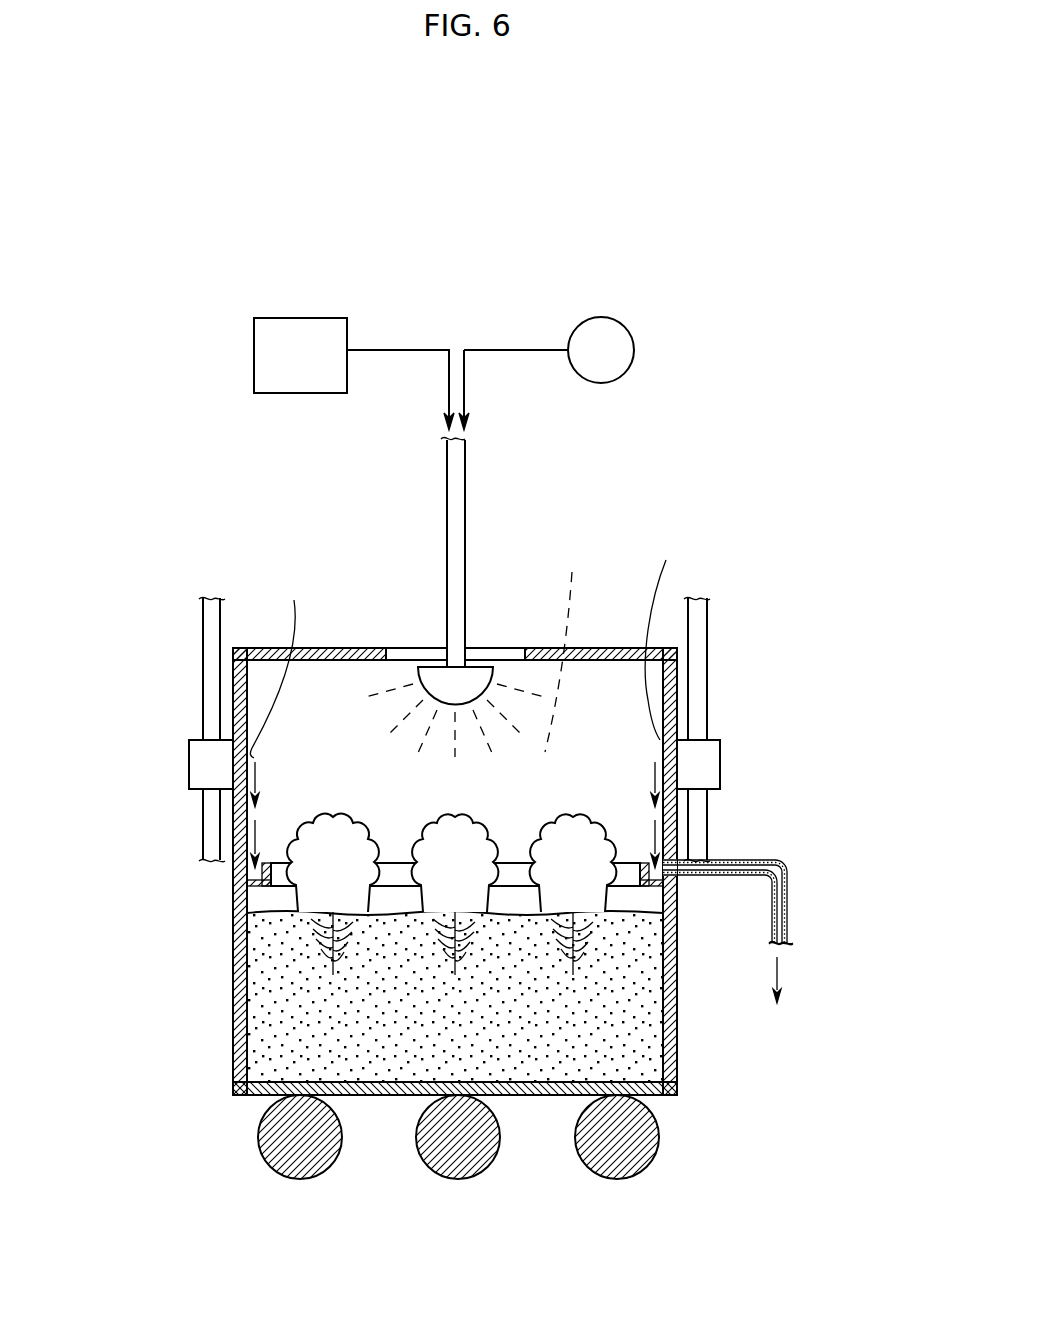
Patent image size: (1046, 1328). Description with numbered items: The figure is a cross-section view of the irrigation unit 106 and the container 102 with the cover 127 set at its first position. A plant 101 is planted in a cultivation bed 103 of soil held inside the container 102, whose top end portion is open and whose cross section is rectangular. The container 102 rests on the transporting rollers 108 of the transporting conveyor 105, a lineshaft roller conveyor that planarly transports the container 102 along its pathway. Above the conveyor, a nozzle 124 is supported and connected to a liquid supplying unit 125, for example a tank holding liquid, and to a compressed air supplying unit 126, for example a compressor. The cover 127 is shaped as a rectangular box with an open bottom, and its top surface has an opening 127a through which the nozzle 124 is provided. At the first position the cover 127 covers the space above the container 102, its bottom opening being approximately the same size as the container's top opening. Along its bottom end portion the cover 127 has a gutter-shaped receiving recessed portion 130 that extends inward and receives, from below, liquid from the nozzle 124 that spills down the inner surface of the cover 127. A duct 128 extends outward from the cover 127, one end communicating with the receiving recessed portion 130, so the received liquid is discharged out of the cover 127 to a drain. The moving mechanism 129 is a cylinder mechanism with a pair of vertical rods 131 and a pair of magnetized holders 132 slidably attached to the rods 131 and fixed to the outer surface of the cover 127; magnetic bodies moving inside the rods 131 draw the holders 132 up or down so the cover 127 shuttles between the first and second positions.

The plant 101 is at (553, 825).
The container 102 is at (668, 1037).
The cultivation bed 103 is at (640, 1060).
The transporting conveyor 105 is at (522, 1180).
The irrigation unit 106 is at (257, 530).
The transporting rollers 108 is at (606, 1152).
The nozzle 124 is at (433, 688).
The liquid supplying unit 125 is at (305, 335).
The compressed air supplying unit 126 is at (610, 337).
The cover 127 is at (455, 620).
The opening 127a is at (492, 655).
The duct 128 is at (755, 861).
The moving mechanism 129 is at (462, 729).
The receiving recessed portion 130 is at (262, 885).
The rods 131 is at (208, 714).
The holders 132 is at (205, 765).